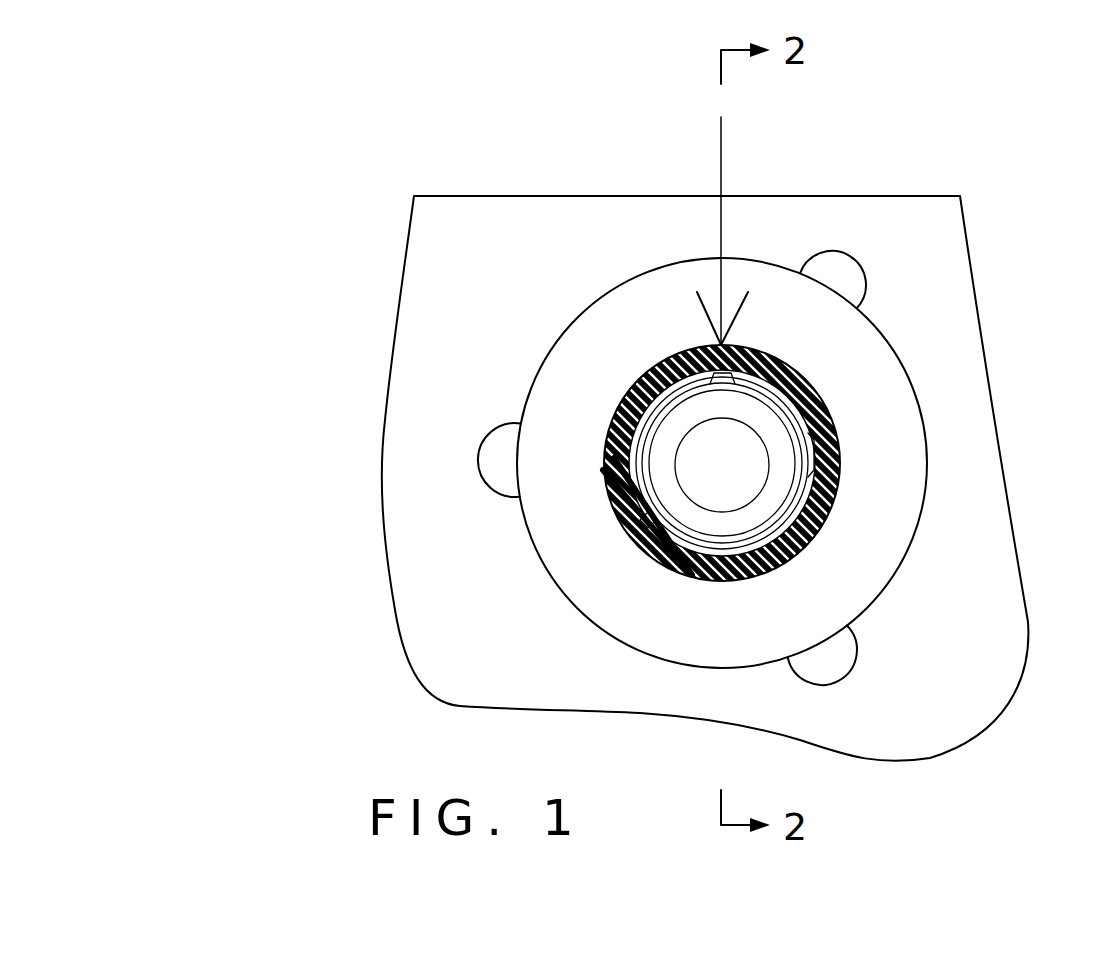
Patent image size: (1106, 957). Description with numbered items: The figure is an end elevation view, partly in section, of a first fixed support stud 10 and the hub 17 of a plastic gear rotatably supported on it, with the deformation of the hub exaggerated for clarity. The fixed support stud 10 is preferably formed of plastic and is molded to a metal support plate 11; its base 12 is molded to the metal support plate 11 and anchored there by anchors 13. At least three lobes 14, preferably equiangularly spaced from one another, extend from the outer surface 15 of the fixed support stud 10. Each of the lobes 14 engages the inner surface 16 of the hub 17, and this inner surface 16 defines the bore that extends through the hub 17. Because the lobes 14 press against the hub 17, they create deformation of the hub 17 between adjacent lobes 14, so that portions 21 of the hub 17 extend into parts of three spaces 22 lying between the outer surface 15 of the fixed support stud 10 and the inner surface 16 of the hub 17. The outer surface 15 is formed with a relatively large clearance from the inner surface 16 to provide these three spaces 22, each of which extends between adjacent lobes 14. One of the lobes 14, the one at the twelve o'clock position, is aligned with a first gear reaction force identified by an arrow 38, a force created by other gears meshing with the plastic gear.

The first fixed support stud 10 is at (766, 376).
The metal support plate 11 is at (986, 236).
The base 12 is at (601, 301).
The anchors 13 is at (486, 487).
The lobes 14 is at (746, 348).
The outer surface 15 is at (607, 466).
The inner surface 16 is at (673, 562).
The hub 17 is at (614, 397).
The portions 21 is at (658, 398).
The spaces 22 is at (633, 487).
The arrow 38 is at (722, 143).